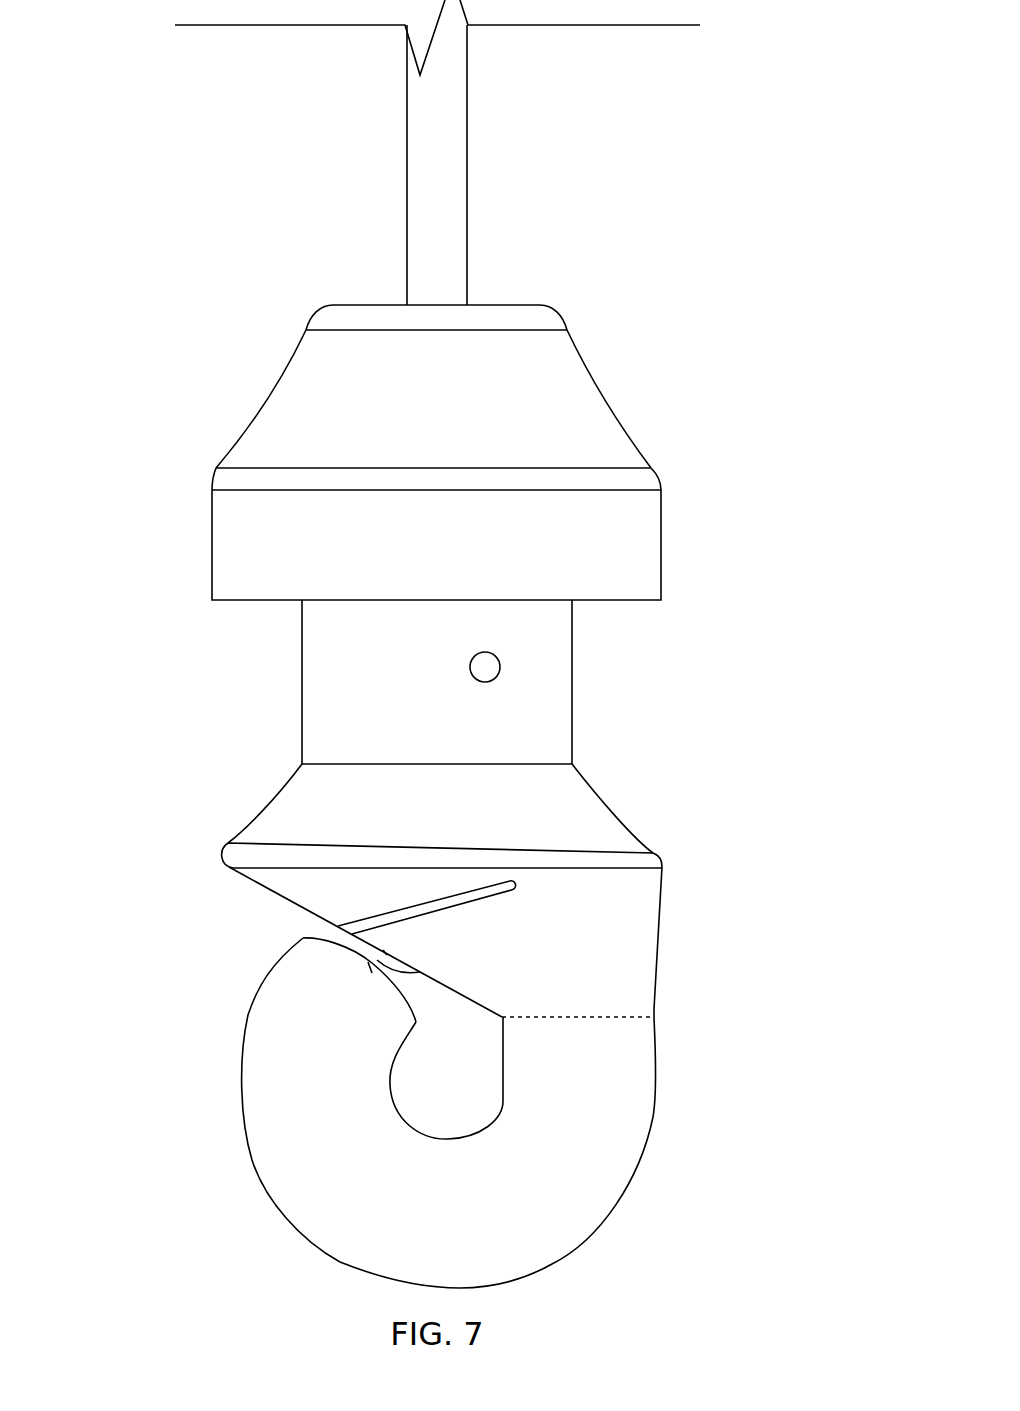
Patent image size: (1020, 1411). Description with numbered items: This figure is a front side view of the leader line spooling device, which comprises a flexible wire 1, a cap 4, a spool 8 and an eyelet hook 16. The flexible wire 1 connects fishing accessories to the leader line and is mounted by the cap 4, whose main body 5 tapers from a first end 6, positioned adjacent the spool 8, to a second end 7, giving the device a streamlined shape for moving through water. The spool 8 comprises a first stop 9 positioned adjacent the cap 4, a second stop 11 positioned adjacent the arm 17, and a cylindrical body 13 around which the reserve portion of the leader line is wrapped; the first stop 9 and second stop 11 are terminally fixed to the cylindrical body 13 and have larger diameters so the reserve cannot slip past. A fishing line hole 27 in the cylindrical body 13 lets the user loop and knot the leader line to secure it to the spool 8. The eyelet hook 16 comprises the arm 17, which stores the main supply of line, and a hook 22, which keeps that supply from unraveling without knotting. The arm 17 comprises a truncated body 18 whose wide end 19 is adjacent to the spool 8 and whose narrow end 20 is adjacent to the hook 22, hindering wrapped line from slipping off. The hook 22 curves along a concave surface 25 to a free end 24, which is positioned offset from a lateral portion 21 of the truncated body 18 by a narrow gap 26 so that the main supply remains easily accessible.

The flexible wire 1 is at (403, 203).
The cap 4 is at (202, 375).
The main body 5 is at (580, 371).
The first end 6 is at (210, 478).
The second end 7 is at (312, 318).
The spool 8 is at (701, 697).
The first stop 9 is at (658, 520).
The second stop 11 is at (577, 783).
The cylindrical body 13 is at (567, 722).
The eyelet hook 16 is at (434, 1070).
The arm 17 is at (464, 1070).
The truncated body 18 is at (655, 961).
The wide end 19 is at (659, 883).
The narrow end 20 is at (656, 1010).
The lateral portion 21 is at (285, 898).
The hook 22 is at (246, 1112).
The free end 24 is at (277, 957).
The concave surface 25 is at (488, 1110).
The narrow gap 26 is at (420, 972).
The fishing line hole 27 is at (500, 663).